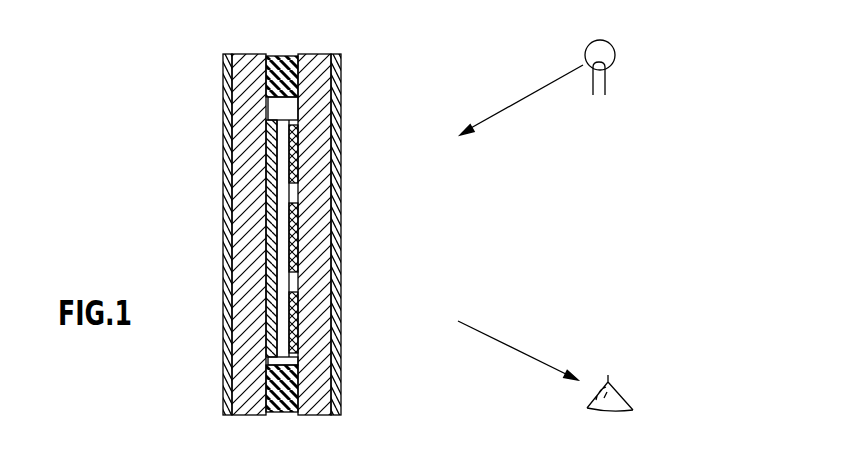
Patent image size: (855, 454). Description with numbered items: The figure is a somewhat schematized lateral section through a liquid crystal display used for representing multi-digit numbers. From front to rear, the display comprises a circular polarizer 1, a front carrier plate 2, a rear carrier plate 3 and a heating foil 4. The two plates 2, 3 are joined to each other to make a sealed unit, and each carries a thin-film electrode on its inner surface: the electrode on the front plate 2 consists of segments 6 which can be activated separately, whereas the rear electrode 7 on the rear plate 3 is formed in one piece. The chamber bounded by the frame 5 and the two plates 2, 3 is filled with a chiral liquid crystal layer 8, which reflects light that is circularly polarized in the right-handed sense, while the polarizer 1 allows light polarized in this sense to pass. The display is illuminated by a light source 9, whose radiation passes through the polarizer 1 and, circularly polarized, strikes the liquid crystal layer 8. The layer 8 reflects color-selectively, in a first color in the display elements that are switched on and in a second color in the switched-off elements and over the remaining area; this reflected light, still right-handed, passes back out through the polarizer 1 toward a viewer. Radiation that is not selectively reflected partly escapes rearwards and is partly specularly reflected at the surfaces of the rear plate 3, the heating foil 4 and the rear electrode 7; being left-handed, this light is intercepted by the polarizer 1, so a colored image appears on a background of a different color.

The circular polarizer 1 is at (340, 231).
The front carrier plate 2 is at (310, 185).
The rear carrier plate 3 is at (243, 113).
The heating foil 4 is at (227, 262).
The frame 5 is at (287, 57).
The segments 6 is at (293, 300).
The rear electrode 7 is at (270, 182).
The chiral liquid crystal layer 8 is at (300, 116).
The light source 9 is at (597, 42).